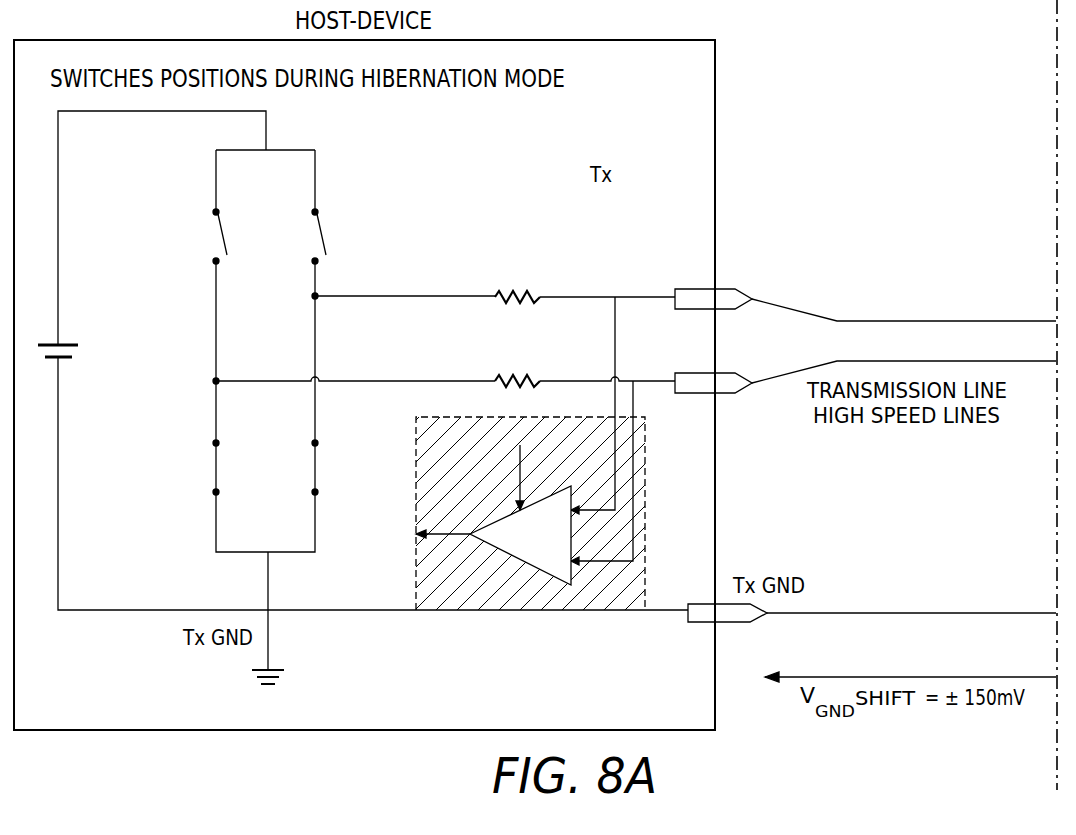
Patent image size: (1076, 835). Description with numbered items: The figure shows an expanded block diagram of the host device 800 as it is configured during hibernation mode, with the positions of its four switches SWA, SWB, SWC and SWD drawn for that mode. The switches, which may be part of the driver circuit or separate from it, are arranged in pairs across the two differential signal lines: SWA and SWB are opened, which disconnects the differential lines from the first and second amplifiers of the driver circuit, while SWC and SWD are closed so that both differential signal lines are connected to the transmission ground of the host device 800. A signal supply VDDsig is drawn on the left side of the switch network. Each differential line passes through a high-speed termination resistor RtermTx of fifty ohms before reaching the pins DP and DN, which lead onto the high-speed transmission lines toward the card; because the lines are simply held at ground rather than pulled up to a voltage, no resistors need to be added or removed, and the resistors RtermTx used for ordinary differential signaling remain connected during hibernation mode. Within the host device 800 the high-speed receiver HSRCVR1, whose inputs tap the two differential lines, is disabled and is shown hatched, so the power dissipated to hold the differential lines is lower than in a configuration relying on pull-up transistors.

The host device 800 is at (199, 730).
The switch SWA is at (193, 236).
The switch SWB is at (341, 236).
The switch SWC is at (189, 467).
The switch SWD is at (342, 467).
The high-speed termination resistor RtermTx is at (445, 319).
The signal supply voltage source VDDsig is at (360, 360).
The High-Speed Receiver HS Rcvr1 HSRCVR1 is at (409, 513).
The positive data pin DP is at (854, 284).
The negative data pin DN is at (854, 398).